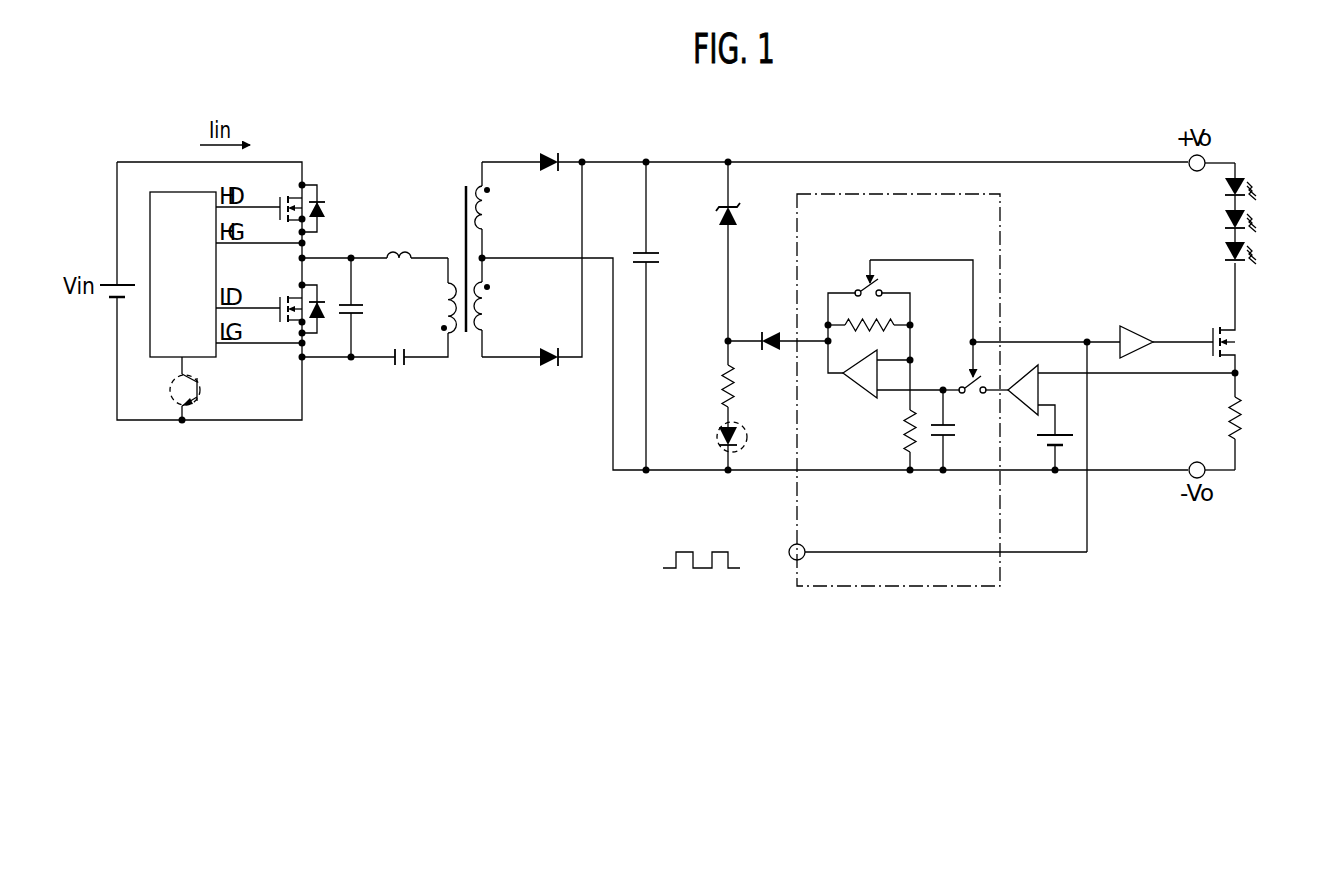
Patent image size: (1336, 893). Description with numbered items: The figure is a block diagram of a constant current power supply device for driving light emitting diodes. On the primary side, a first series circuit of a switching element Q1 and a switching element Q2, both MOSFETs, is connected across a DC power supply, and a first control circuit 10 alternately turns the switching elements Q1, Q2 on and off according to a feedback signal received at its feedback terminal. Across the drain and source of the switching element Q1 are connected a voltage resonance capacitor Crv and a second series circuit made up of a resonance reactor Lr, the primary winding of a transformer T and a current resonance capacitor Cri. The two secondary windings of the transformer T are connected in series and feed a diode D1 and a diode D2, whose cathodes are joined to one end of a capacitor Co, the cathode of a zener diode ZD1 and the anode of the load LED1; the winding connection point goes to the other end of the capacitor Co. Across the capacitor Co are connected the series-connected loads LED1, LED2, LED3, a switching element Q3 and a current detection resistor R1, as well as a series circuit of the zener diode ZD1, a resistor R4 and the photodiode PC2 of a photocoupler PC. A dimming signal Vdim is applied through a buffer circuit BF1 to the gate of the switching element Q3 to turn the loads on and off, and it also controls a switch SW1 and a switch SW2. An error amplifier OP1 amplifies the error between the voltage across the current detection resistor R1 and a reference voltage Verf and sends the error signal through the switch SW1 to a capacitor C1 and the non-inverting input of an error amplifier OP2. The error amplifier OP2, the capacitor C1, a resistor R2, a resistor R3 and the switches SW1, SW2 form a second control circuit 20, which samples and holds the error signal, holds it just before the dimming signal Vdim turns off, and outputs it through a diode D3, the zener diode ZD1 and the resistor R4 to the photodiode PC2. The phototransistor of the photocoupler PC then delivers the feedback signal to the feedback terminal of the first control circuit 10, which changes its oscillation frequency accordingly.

The first control circuit 10 is at (198, 357).
The second control circuit 20 is at (943, 390).
The switching element Q1 is at (295, 296).
The switching element Q2 is at (295, 196).
The switching element Q3 is at (1246, 330).
The diode D1 is at (548, 152).
The diode D2 is at (548, 370).
The diode D3 is at (773, 331).
The zener diode ZD1 is at (741, 210).
The resonance reactor Lr is at (399, 241).
The voltage resonance capacitor Crv is at (373, 307).
The current resonance capacitor Cri is at (415, 369).
The transformer T is at (472, 247).
The capacitor Co is at (638, 316).
The current detection resistor R1 is at (1253, 418).
The resistor R2 is at (895, 432).
The resistor R3 is at (869, 338).
The resistor R4 is at (744, 386).
The capacitor C1 is at (955, 430).
The switch SW1 is at (967, 367).
The switch SW2 is at (865, 291).
The error amplifier OP1 is at (1007, 394).
The error amplifier OP2 is at (847, 385).
The buffer circuit BF1 is at (1136, 329).
The reference voltage Verf is at (1033, 437).
The dimming signal Vdim is at (875, 565).
The photocoupler PC is at (164, 388).
The photodiode of photocoupler PC2 is at (715, 437).
The load LED1 is at (1269, 189).
The load LED2 is at (1269, 222).
The load LED3 is at (1269, 254).